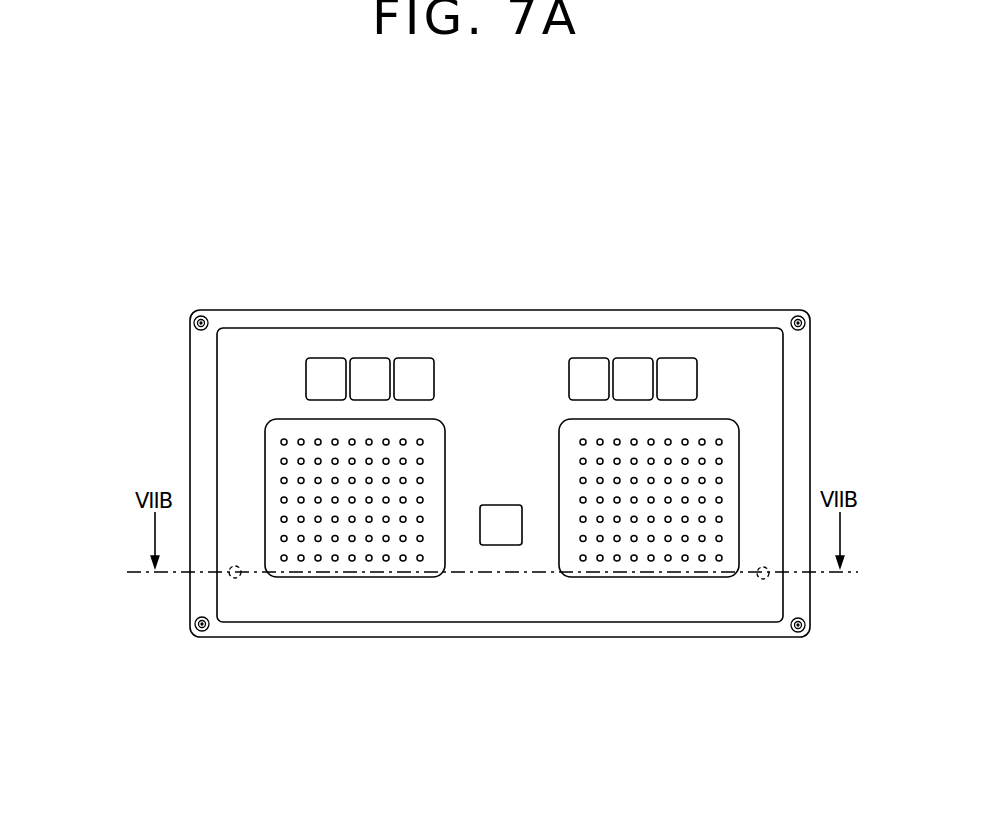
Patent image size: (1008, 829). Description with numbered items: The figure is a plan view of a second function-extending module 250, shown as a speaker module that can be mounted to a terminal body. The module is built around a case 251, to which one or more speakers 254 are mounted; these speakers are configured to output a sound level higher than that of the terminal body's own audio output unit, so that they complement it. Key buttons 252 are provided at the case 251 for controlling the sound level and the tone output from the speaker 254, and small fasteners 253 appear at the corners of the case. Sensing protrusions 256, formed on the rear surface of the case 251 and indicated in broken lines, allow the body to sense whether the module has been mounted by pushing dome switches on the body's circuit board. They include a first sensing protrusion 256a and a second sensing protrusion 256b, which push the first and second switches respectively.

The second function-extending module 250 is at (172, 402).
The case 251 is at (200, 448).
The key buttons 252 is at (413, 365).
The fastening screws 253 is at (199, 631).
The speaker 254 is at (723, 441).
The sensing protrusions 256 is at (499, 674).
The first sensing protrusion 256a is at (240, 578).
The second sensing protrusion 256b is at (759, 579).